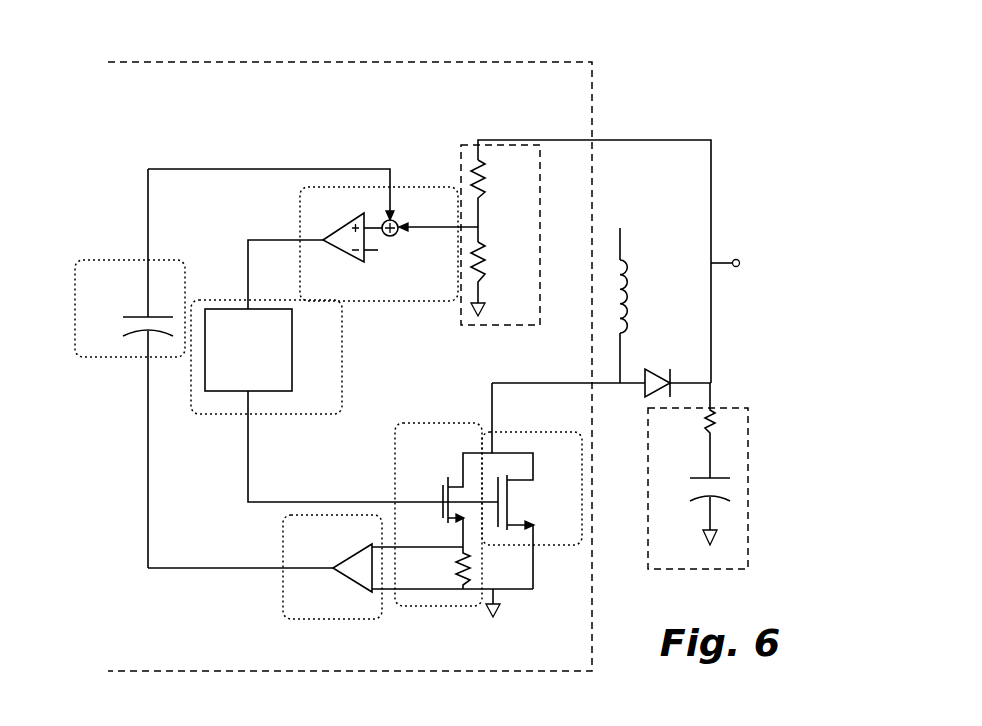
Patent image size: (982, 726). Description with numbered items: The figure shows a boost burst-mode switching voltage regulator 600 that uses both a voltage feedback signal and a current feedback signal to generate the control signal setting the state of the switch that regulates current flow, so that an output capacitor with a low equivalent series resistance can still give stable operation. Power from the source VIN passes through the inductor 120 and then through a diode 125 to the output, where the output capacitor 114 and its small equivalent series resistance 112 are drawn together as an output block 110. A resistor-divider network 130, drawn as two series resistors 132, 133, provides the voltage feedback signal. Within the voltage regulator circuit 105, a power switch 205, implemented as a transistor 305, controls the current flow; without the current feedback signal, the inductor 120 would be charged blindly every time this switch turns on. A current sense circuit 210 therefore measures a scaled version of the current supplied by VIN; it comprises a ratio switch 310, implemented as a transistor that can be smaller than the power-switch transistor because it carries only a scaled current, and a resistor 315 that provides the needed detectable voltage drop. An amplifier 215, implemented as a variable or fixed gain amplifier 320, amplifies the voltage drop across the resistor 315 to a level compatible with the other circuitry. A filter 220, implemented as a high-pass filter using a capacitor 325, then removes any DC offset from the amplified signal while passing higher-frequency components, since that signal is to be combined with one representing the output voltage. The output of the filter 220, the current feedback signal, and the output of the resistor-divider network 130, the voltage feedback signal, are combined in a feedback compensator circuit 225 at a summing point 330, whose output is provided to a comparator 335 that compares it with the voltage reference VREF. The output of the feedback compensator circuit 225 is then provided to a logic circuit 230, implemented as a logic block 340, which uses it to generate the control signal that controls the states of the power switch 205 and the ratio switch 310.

The boost burst-mode switching voltage regulator 600 is at (737, 67).
The voltage regulator circuit 105 is at (405, 62).
The output filter network 110 is at (718, 573).
The output resistor 112 is at (703, 428).
The output capacitor 114 is at (703, 496).
The inductor 120 is at (633, 311).
The diode 125 is at (653, 394).
The resistor-divider network 130 is at (462, 313).
The upper divider resistor 132 is at (487, 184).
The lower divider resistor 133 is at (487, 273).
The power switch 205 is at (540, 433).
The current sense circuit 210 is at (440, 426).
The amplifier 215 is at (283, 563).
The filter 220 is at (108, 261).
The feedback compensator circuit 225 is at (428, 185).
The logic circuit 230 is at (342, 364).
The transistor 305 is at (517, 506).
The ratio switch 310 is at (441, 496).
The resistor 315 is at (475, 567).
The variable or fixed gain amplifier 320 is at (340, 564).
The capacitor 325 is at (125, 326).
The summing point 330 is at (400, 219).
The comparator 335 is at (346, 257).
The logic block 340 is at (292, 376).